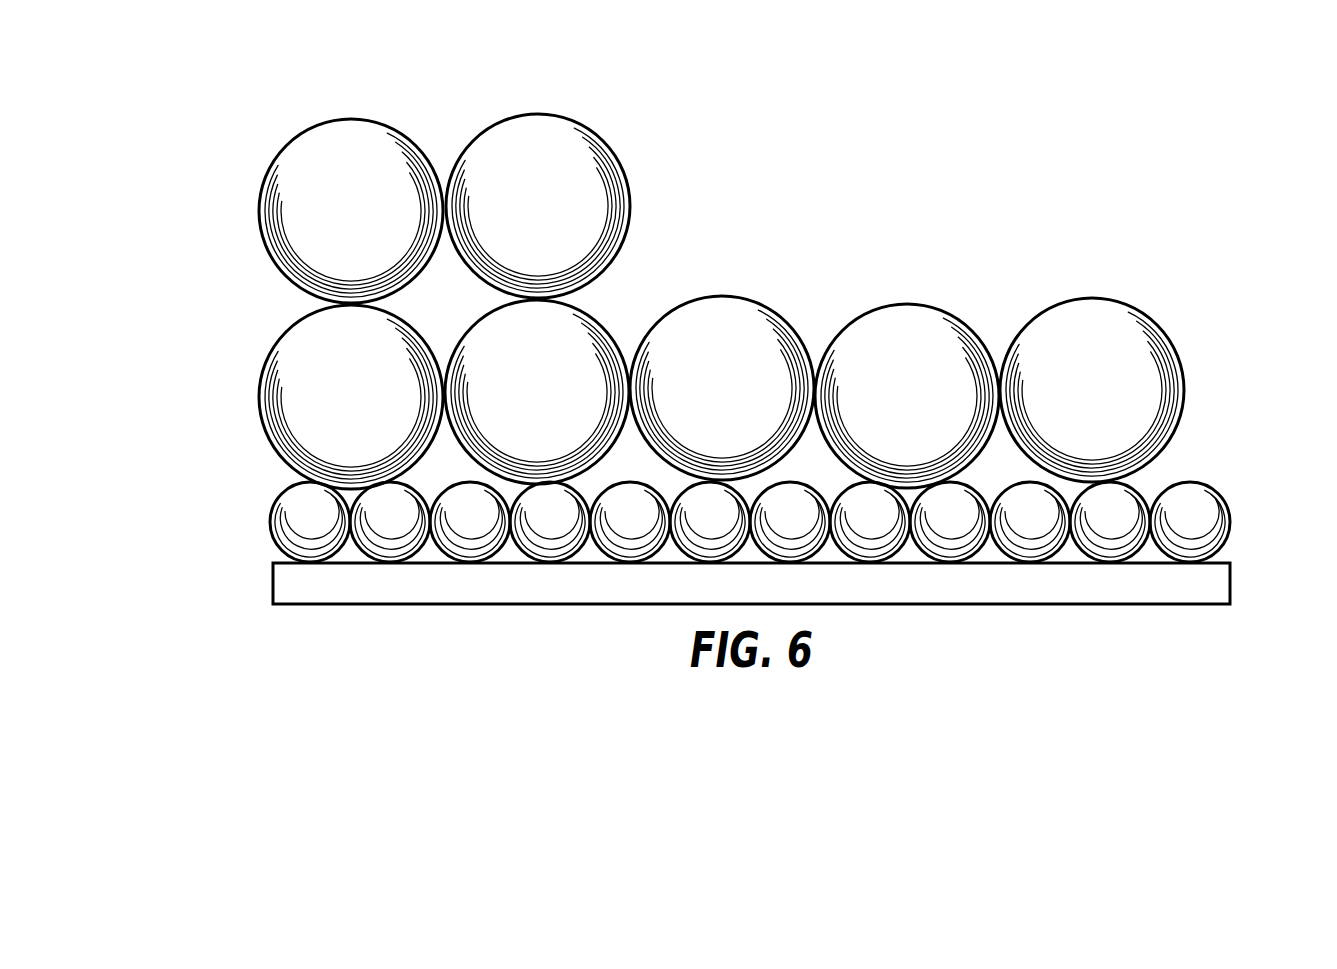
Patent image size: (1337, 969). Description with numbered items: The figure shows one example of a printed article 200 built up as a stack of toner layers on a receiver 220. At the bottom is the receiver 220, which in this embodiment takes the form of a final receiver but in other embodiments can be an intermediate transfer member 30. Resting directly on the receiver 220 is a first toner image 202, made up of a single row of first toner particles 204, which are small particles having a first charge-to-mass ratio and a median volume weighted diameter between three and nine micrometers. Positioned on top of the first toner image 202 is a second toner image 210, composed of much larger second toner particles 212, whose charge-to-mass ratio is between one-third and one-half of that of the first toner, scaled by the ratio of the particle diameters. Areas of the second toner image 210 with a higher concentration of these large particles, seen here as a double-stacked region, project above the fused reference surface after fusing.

The printed article 200 is at (1020, 125).
The second toner image 210 is at (140, 320).
The second toner particles 212 is at (258, 216).
The first toner image 202 is at (140, 522).
The first toner particles 204 is at (270, 518).
The receiver 220 is at (694, 583).
The intermediate transfer member 30 is at (272, 586).